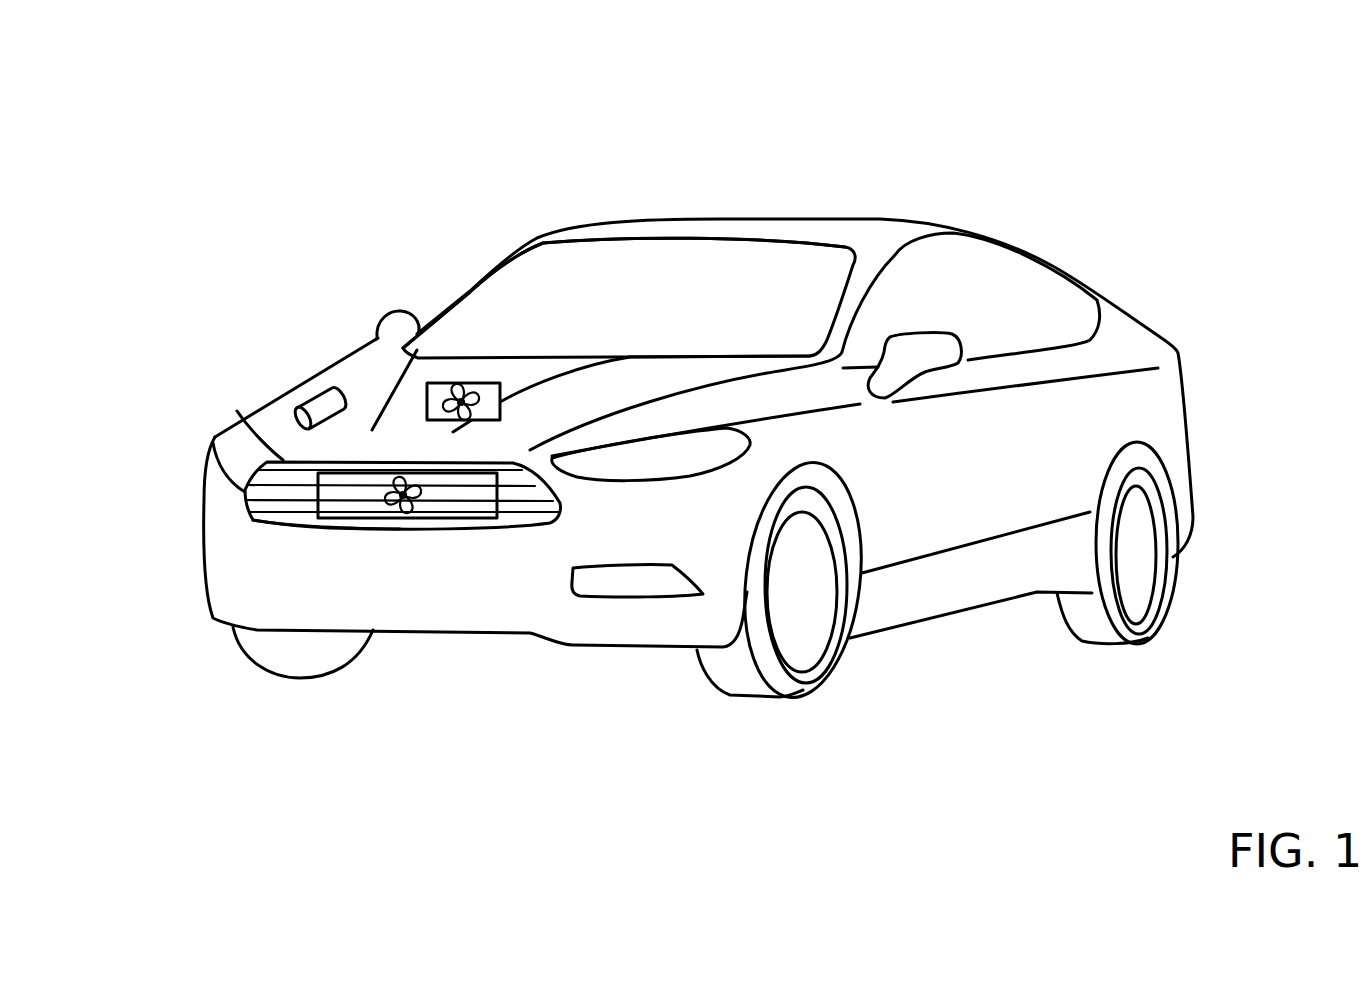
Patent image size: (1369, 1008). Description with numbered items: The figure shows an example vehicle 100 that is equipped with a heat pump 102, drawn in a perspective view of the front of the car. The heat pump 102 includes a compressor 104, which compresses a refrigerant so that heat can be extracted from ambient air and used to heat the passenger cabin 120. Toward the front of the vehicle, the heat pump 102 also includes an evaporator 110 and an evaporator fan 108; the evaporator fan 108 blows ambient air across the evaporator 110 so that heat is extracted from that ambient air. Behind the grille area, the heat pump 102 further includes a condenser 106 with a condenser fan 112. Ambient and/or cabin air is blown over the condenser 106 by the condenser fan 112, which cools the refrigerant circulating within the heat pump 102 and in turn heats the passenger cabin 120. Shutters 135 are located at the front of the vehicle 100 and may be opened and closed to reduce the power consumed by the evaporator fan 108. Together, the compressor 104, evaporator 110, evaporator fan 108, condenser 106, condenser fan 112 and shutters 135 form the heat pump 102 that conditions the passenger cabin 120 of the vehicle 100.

The vehicle 100 is at (127, 97).
The heat pump 102 is at (316, 374).
The compressor 104 is at (333, 391).
The condenser 106 is at (497, 418).
The evaporator fan 108 is at (397, 512).
The evaporator 110 is at (500, 530).
The condenser fan 112 is at (443, 388).
The passenger cabin 120 is at (651, 302).
The shutters 135 is at (268, 512).